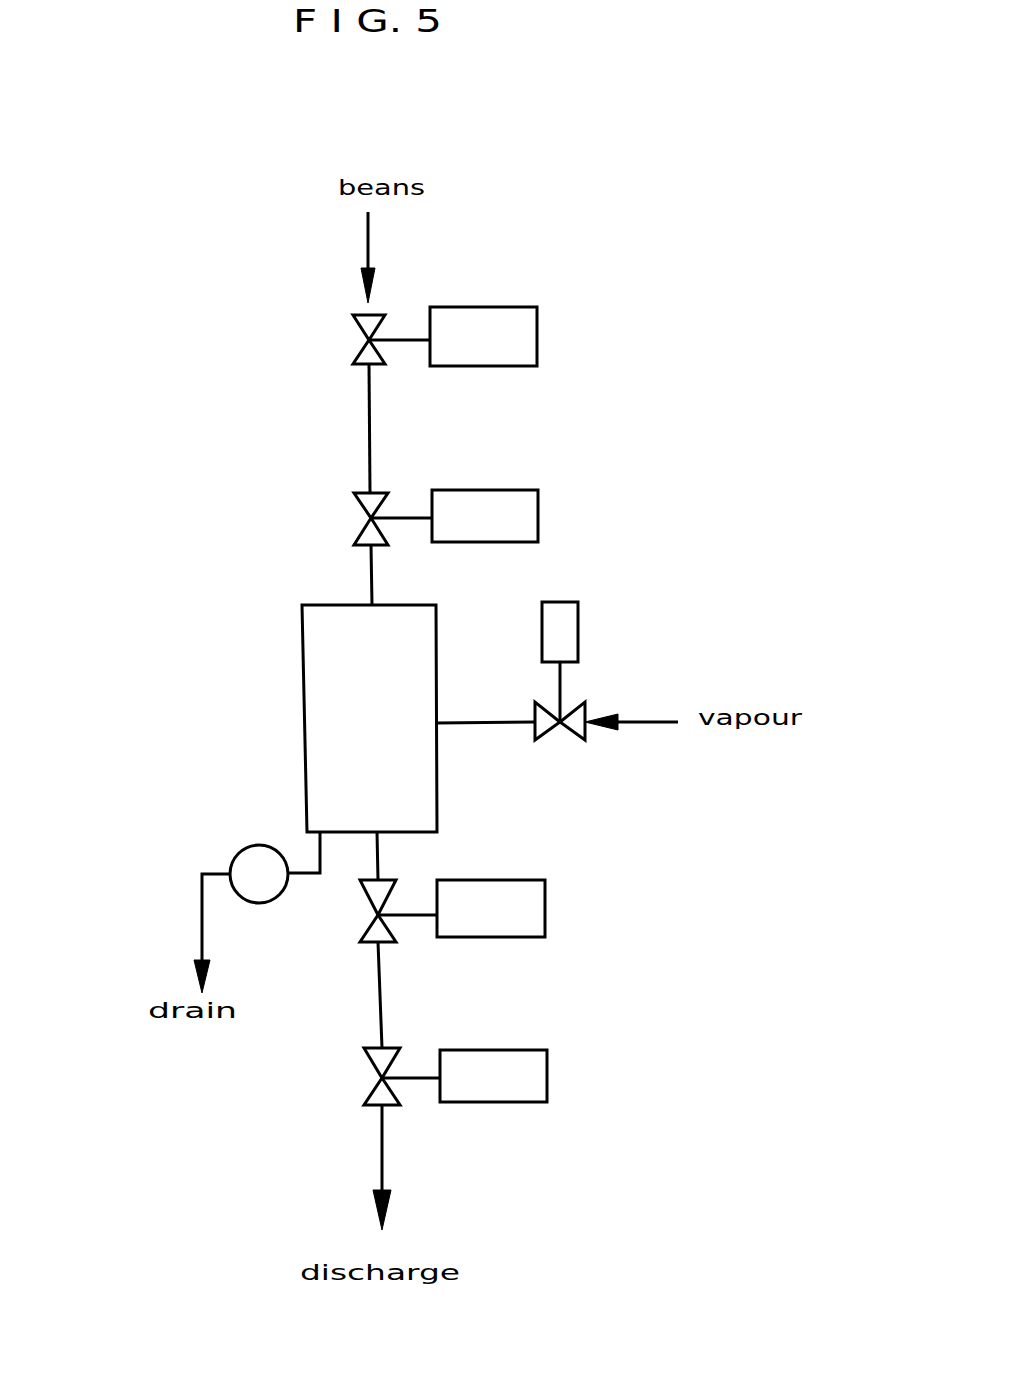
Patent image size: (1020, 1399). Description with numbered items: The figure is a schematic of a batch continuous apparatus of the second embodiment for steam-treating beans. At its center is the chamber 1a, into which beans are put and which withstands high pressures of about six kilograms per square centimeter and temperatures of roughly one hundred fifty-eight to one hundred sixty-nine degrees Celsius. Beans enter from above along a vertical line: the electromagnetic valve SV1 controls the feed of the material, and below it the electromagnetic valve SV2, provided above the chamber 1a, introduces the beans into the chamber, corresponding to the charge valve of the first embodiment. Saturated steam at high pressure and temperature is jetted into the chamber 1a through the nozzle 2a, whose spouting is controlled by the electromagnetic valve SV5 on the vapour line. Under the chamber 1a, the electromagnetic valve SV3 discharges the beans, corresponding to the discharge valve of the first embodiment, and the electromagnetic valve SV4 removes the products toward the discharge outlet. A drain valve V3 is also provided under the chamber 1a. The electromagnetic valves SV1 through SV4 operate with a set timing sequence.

The electromagnetic valve SV1 is at (355, 324).
The electromagnetic valve SV2 is at (356, 508).
The chamber 1a is at (302, 668).
The nozzle 2a is at (473, 725).
The electromagnetic valve SV5 is at (555, 732).
The drain valve V3 is at (251, 847).
The electromagnetic valve SV3 is at (372, 920).
The electromagnetic valve SV4 is at (378, 1085).